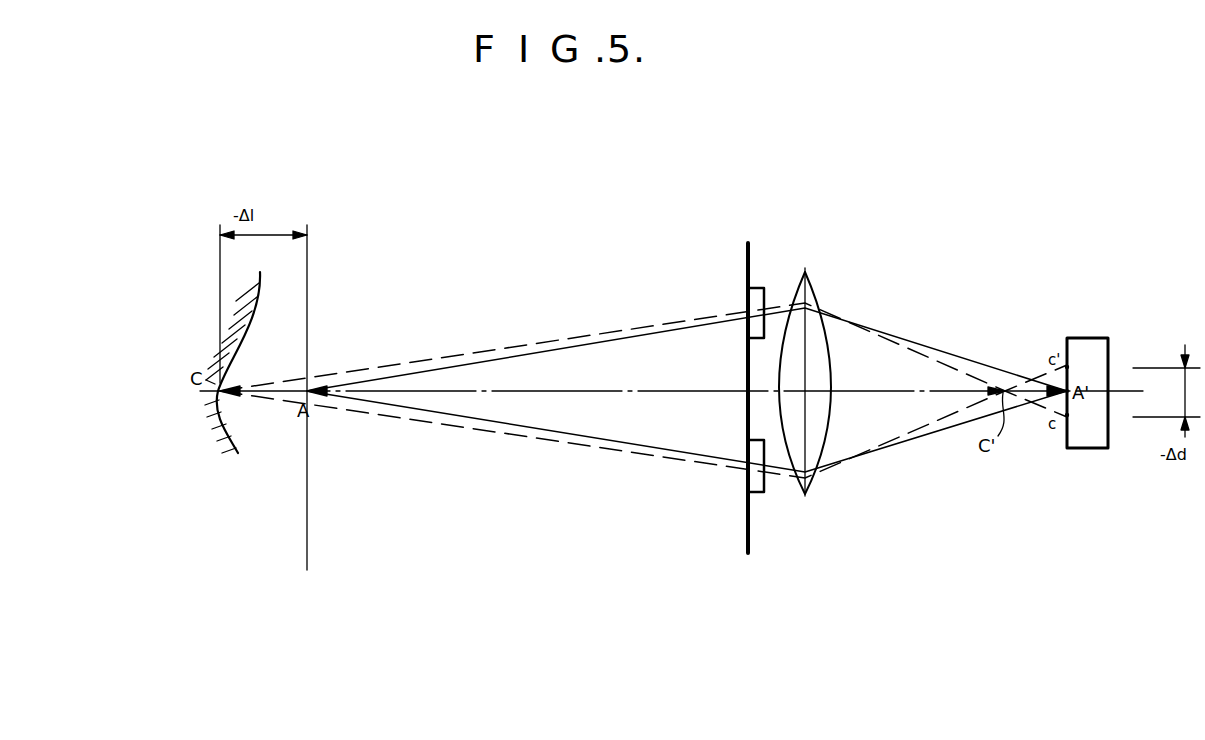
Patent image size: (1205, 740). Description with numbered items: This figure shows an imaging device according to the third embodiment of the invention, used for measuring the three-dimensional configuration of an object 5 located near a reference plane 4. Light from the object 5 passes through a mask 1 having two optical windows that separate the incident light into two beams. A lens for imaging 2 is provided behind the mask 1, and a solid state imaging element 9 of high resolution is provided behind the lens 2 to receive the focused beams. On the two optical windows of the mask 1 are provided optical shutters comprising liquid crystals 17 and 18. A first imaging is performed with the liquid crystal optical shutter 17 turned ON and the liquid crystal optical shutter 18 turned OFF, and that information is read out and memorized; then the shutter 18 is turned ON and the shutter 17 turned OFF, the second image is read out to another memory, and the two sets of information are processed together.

The mask 1 is at (748, 243).
The lens for imaging 2 is at (812, 300).
The reference plane 4 is at (310, 286).
The object 5 is at (232, 445).
The imaging element 9 is at (1090, 448).
The liquid crystal optical shutter 17 is at (760, 288).
The liquid crystal optical shutter 18 is at (765, 490).